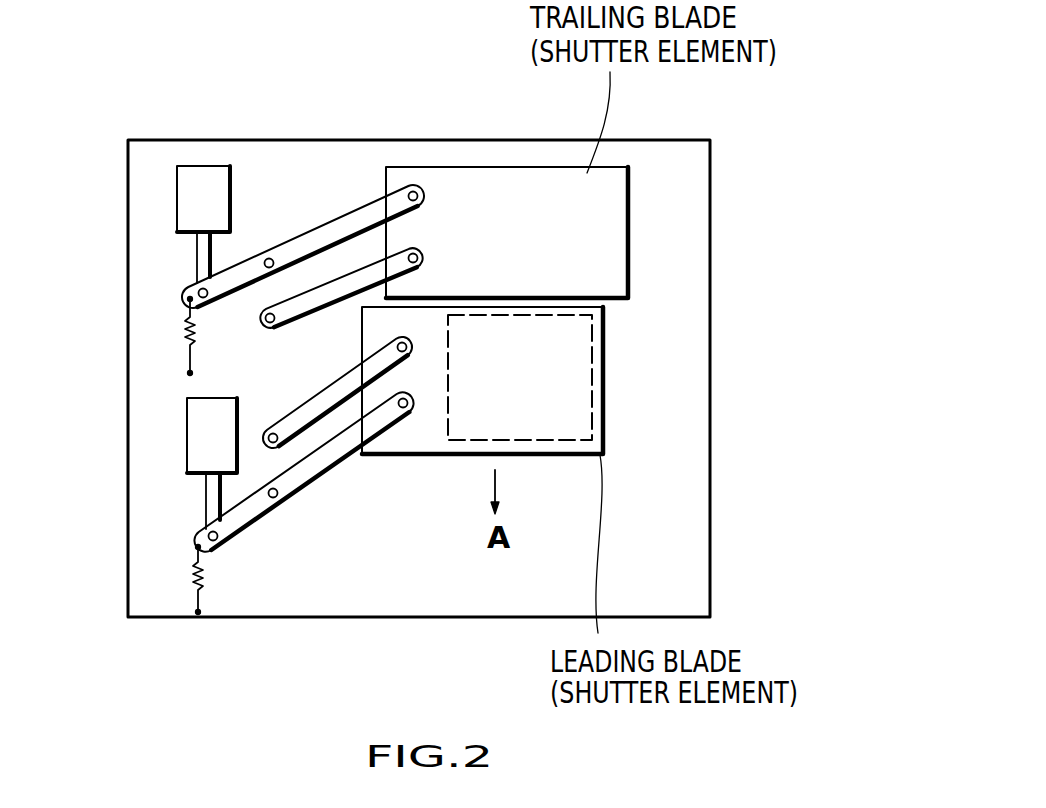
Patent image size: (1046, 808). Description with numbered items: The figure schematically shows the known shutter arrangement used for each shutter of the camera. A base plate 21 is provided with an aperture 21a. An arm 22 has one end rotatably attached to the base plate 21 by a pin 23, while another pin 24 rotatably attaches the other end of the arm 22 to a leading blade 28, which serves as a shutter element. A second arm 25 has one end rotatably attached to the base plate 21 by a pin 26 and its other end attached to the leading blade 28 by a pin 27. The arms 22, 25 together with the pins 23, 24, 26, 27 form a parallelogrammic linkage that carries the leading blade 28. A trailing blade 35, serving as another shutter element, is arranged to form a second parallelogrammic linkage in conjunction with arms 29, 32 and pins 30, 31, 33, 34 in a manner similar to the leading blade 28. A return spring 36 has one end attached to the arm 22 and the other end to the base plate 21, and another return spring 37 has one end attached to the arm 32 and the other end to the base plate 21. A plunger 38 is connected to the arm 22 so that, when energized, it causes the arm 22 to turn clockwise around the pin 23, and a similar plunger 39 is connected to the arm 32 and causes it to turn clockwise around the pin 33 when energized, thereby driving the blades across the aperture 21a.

The base plate 21 is at (708, 215).
The aperture 21a is at (597, 408).
The arm 22 is at (313, 473).
The pin 23 is at (275, 499).
The pin 24 is at (402, 410).
The arm 25 is at (330, 403).
The pin 26 is at (270, 434).
The pin 27 is at (408, 350).
The leading blade 28 is at (555, 443).
The arm 29 is at (325, 305).
The pin 30 is at (271, 323).
The pin 31 is at (416, 252).
The arm 32 is at (332, 223).
The pin 33 is at (266, 258).
The pin 34 is at (413, 190).
The trailing blade 35 is at (522, 173).
The return spring 36 is at (193, 585).
The return spring 37 is at (183, 330).
The plunger 38 is at (187, 432).
The plunger 39 is at (182, 188).